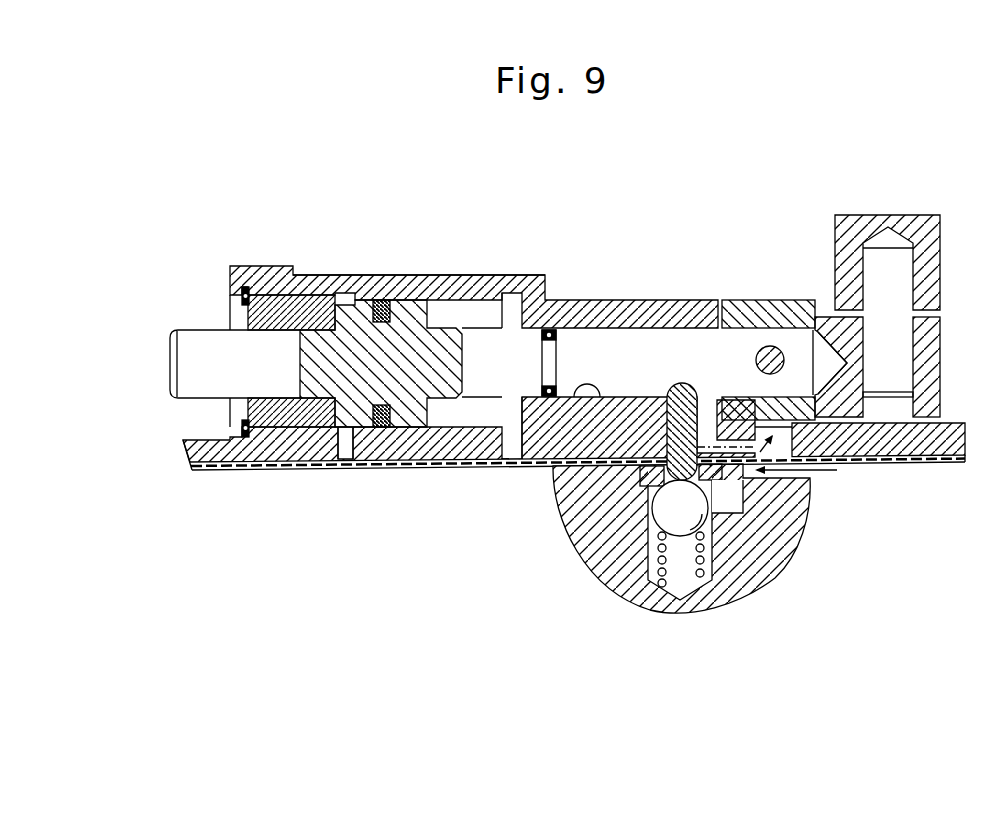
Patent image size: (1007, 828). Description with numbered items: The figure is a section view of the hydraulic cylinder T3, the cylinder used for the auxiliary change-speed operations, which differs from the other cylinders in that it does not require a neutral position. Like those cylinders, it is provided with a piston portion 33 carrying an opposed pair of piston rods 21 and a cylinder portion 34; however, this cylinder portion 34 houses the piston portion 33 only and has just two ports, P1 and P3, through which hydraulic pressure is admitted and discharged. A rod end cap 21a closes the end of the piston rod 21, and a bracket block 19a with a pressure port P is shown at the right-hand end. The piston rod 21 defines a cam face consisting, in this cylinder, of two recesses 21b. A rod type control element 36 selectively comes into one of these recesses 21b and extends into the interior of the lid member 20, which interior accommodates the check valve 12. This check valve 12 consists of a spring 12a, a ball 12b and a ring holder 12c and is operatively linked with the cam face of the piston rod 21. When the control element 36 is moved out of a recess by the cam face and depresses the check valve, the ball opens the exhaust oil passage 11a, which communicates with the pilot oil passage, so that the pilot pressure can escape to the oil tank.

The cylinder portion 34 is at (340, 276).
The piston portion 33 is at (416, 310).
The hydraulic cylinder T3 is at (500, 256).
The piston rod 21 is at (188, 353).
The rod end cap 21a is at (800, 306).
The recess 21b is at (587, 394).
The bracket block 19a is at (928, 220).
The pressure port P is at (898, 292).
The port P1 is at (343, 447).
The port P3 is at (508, 447).
The control element 36 is at (597, 517).
The exhaust oil passage 11a is at (790, 480).
The check valve 12 is at (715, 528).
The spring 12a is at (660, 583).
The ball 12b is at (680, 545).
The ring holder 12c is at (580, 558).
The lid member 20 is at (740, 593).